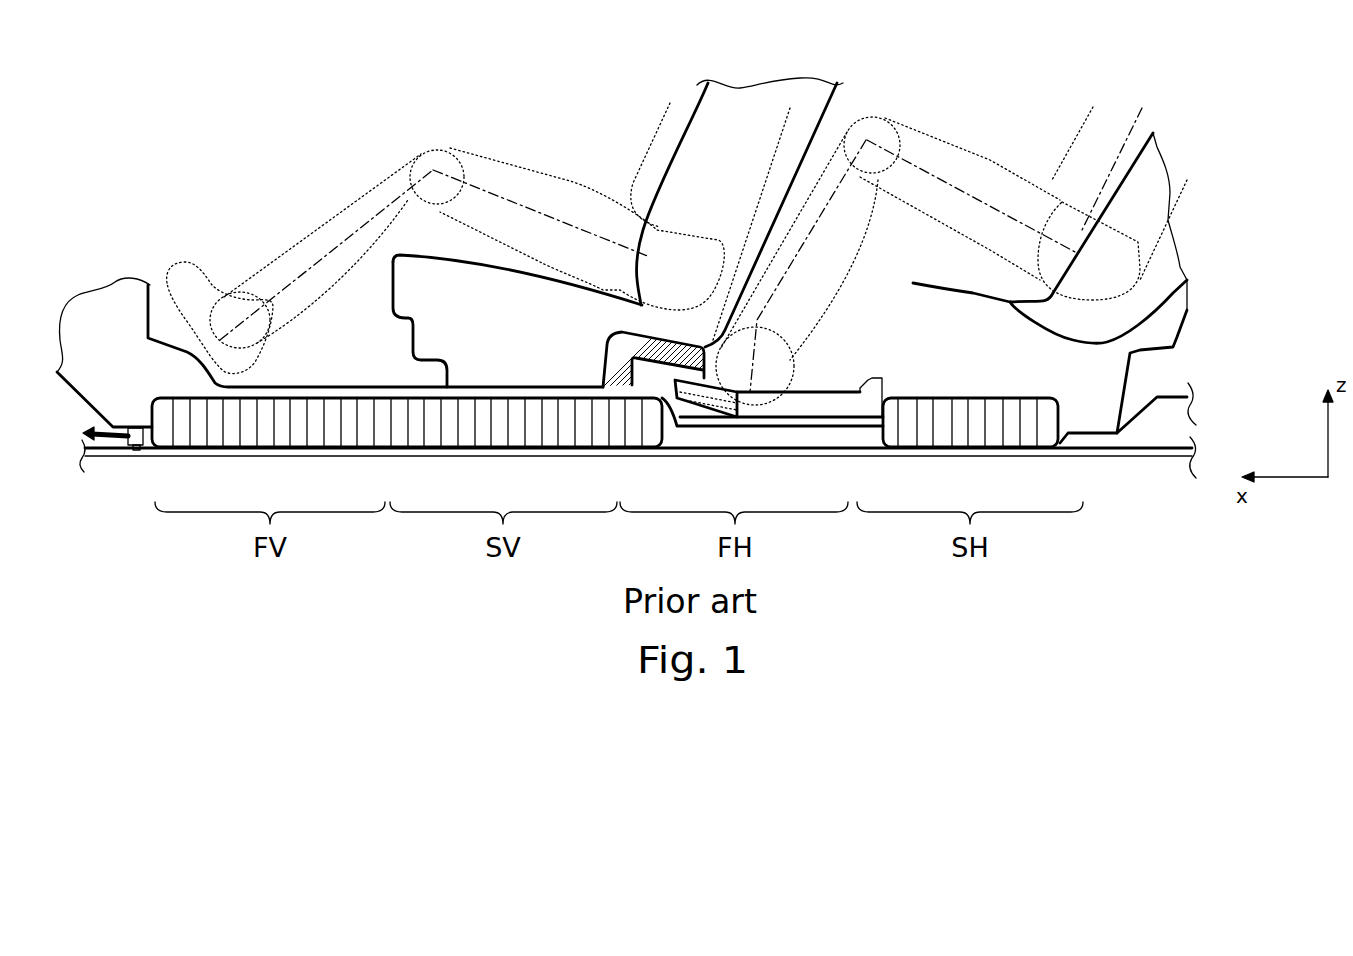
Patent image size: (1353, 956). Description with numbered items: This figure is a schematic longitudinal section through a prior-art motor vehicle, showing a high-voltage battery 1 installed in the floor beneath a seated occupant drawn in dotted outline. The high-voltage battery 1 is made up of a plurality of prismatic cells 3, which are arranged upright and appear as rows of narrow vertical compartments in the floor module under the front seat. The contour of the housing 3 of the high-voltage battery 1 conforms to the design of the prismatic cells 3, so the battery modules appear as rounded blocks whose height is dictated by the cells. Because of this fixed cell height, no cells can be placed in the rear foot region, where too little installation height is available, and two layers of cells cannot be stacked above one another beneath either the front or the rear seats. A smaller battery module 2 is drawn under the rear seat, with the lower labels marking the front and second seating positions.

The vehicle seating arrangement (prior art) 1 is at (281, 166).
The rear battery module 2 is at (977, 432).
The front battery module 3 is at (233, 432).